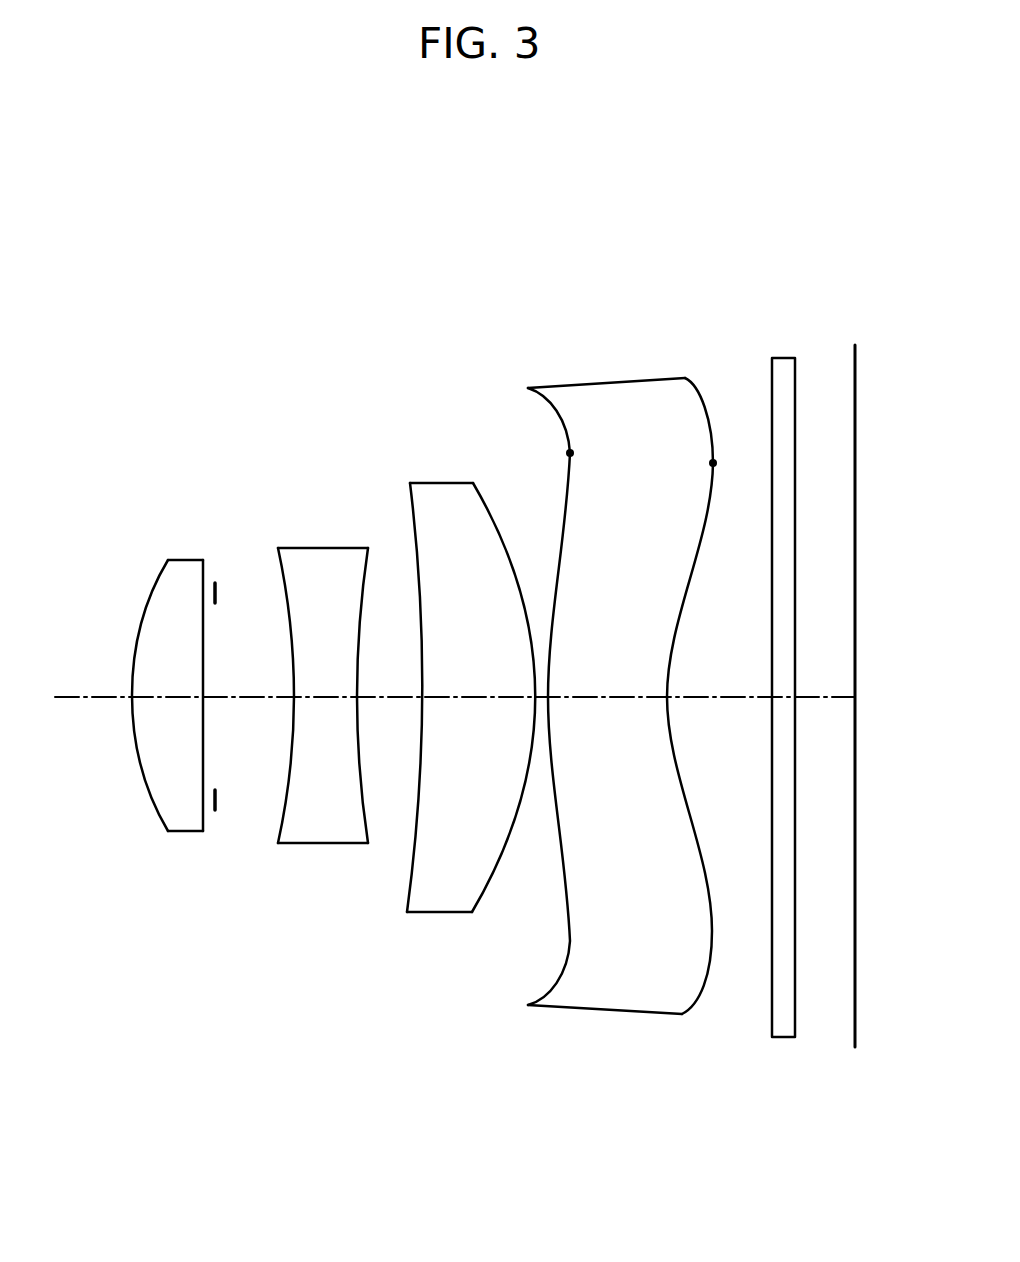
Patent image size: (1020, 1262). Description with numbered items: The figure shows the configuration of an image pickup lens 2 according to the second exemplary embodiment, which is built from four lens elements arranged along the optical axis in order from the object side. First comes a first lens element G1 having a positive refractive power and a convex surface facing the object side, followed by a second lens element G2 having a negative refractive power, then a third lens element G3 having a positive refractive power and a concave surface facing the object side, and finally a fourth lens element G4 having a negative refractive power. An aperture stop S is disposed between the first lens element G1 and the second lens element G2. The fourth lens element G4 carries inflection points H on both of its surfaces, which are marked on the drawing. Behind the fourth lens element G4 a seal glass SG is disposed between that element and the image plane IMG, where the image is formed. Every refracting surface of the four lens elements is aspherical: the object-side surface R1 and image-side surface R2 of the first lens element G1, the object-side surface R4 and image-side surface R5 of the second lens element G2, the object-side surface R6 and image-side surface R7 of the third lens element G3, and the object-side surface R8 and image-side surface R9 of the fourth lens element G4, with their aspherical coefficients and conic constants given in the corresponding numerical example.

The image pickup lens 2 is at (188, 348).
The first lens element G1 is at (192, 560).
The second lens element G2 is at (326, 548).
The third lens element G3 is at (445, 483).
The fourth lens element G4 is at (613, 378).
The aperture stop S is at (218, 585).
The inflection points H is at (570, 452).
The object-side surface of the first lens element R1 is at (160, 808).
The image-side surface of the first lens element R2 is at (205, 815).
The object-side surface of the second lens element R4 is at (280, 820).
The image-side surface of the second lens element R5 is at (365, 820).
The object-side surface of the third lens element R6 is at (407, 893).
The image-side surface of the third lens element R7 is at (478, 892).
The object-side surface of the fourth lens element R8 is at (565, 958).
The image-side surface of the fourth lens element R9 is at (698, 990).
The seal glass SG is at (792, 358).
The image plane IMG is at (856, 367).